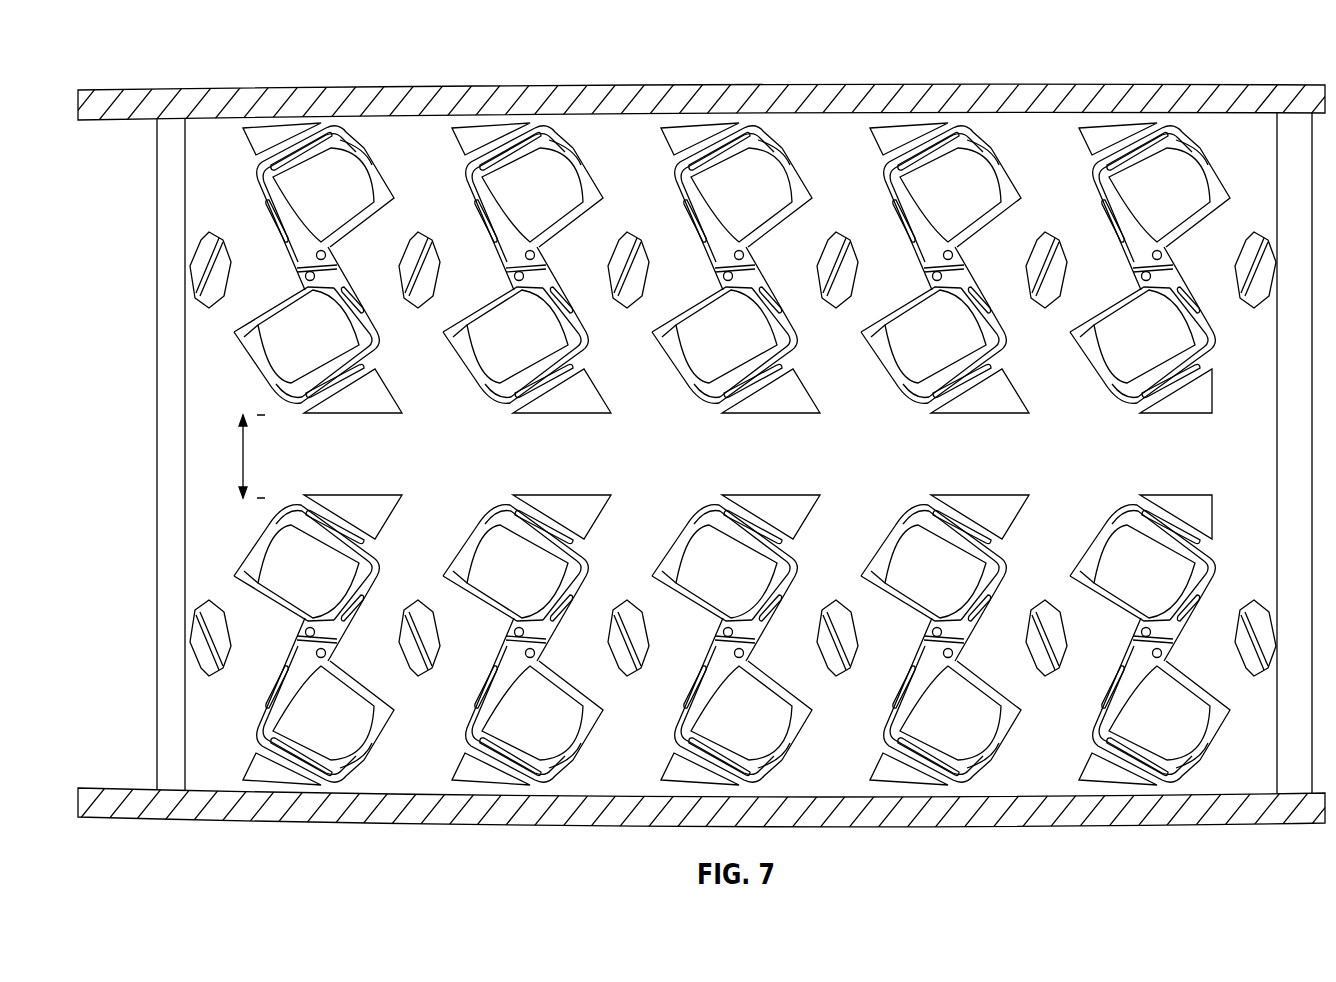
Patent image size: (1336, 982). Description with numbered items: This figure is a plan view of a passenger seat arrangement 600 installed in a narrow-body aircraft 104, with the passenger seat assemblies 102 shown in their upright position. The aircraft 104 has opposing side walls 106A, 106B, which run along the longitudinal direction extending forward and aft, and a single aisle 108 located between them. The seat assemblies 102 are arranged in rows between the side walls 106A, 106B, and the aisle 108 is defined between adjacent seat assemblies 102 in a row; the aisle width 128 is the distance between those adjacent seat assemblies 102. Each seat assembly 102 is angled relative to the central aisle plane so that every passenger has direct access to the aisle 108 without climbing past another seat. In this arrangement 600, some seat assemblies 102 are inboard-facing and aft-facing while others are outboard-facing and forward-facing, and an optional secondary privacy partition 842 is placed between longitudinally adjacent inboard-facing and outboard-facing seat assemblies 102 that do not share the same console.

The passenger seat assembly 102 is at (273, 178).
The narrow-body aircraft 104 is at (699, 466).
The side wall 106A is at (962, 103).
The side wall 106B is at (1020, 797).
The aisle 108 is at (690, 454).
The aisle width 128 is at (243, 457).
The passenger seat arrangement 600 is at (699, 466).
The secondary privacy partition 842 is at (200, 270).